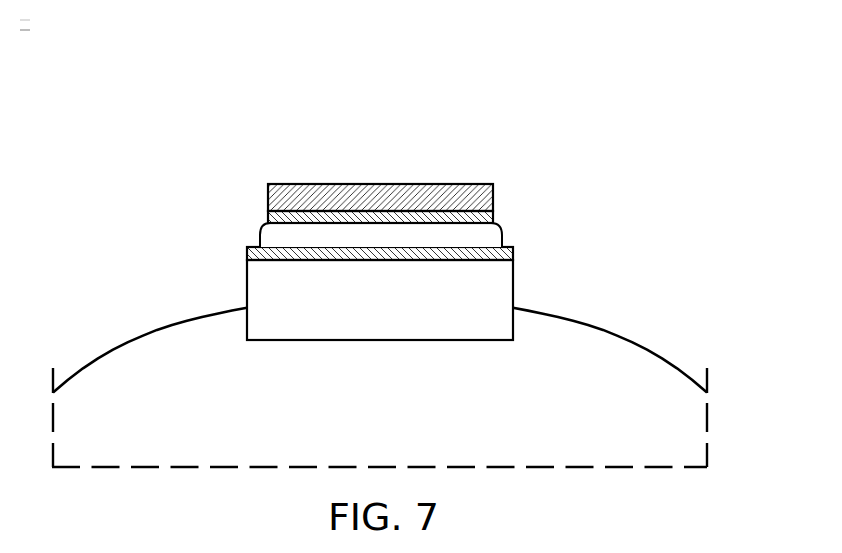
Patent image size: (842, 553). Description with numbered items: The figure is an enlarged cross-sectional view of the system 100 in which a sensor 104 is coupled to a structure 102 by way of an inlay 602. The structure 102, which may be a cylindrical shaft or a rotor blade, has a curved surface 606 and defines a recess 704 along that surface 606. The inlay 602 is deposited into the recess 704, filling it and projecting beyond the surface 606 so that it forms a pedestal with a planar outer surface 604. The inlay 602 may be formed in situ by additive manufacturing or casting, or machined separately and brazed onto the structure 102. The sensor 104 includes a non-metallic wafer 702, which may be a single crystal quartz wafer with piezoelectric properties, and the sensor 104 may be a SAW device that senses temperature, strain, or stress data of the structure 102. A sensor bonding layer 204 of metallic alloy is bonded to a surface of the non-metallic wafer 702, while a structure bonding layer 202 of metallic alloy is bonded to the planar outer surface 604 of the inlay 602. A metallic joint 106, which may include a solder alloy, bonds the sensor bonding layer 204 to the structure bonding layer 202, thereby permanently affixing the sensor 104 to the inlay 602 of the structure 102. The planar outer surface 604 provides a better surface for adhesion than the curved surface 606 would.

The system 100 is at (290, 131).
The structure 102 is at (640, 366).
The sensor 104 is at (434, 176).
The metallic joint 106 is at (268, 234).
The structure bonding layer 202 is at (255, 252).
The sensor bonding layer 204 is at (498, 222).
The inlay 602 is at (262, 291).
The outer surface 604 is at (377, 255).
The surface 606 is at (115, 347).
The non-metallic wafer 702 is at (408, 192).
The recess 704 is at (513, 325).